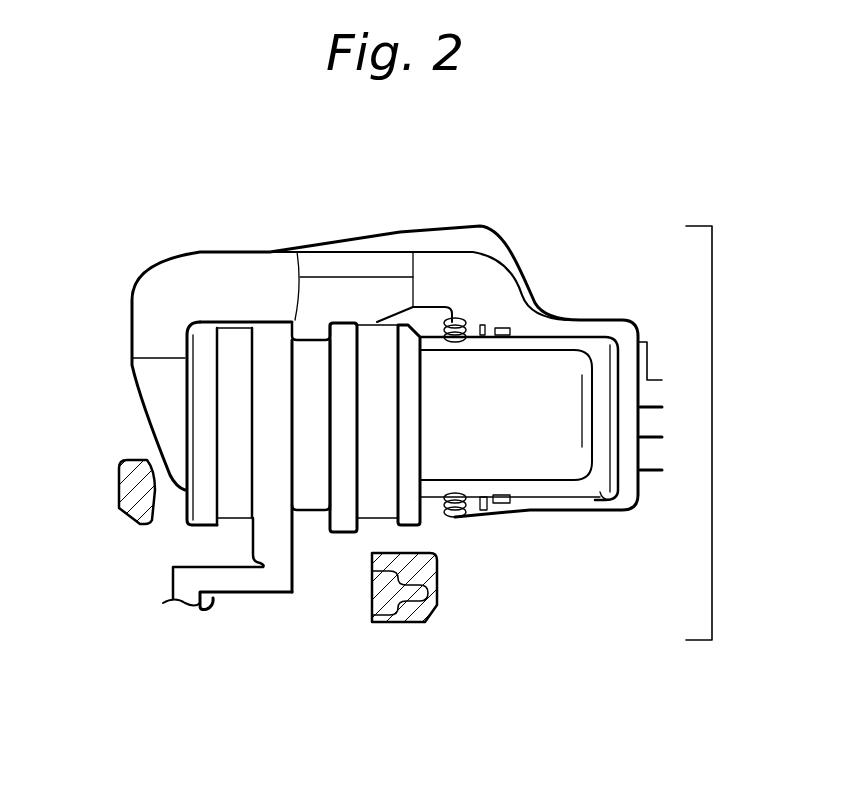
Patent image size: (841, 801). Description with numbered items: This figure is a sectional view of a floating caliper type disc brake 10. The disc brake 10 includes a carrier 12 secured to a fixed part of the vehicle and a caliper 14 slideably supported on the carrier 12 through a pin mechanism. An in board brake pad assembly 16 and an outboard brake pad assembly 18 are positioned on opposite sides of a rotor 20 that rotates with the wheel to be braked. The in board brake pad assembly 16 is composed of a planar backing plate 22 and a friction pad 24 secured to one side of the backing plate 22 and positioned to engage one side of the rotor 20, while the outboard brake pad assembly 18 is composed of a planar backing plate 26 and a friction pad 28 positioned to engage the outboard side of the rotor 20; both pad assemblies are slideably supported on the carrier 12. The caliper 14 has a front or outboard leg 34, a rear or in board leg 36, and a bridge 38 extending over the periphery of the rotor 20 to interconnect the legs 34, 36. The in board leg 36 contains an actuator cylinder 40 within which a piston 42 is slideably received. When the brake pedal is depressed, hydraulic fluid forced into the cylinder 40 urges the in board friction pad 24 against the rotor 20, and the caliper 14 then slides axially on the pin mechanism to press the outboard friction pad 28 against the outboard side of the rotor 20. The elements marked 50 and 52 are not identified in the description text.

The disc brake 10 is at (798, 450).
The carrier 12 is at (437, 575).
The caliper 14 is at (455, 228).
The in board brake pad assembly 16 is at (378, 353).
The outboard brake pad assembly 18 is at (227, 357).
The rotor 20 is at (273, 353).
The backing plate 22 is at (413, 460).
The friction pad 24 is at (368, 507).
The backing plate 26 is at (187, 508).
The friction pad 28 is at (237, 507).
The outboard leg 34 is at (170, 412).
The in board leg 36 is at (590, 503).
The bridge 38 is at (433, 280).
The actuator cylinder 40 is at (540, 342).
The piston 42 is at (597, 472).
The spring contact 50 is at (374, 618).
The seal block 52 is at (116, 500).